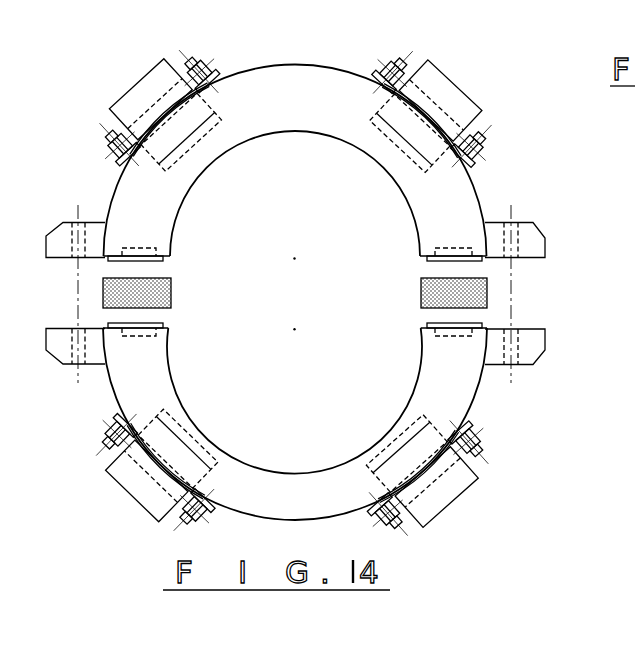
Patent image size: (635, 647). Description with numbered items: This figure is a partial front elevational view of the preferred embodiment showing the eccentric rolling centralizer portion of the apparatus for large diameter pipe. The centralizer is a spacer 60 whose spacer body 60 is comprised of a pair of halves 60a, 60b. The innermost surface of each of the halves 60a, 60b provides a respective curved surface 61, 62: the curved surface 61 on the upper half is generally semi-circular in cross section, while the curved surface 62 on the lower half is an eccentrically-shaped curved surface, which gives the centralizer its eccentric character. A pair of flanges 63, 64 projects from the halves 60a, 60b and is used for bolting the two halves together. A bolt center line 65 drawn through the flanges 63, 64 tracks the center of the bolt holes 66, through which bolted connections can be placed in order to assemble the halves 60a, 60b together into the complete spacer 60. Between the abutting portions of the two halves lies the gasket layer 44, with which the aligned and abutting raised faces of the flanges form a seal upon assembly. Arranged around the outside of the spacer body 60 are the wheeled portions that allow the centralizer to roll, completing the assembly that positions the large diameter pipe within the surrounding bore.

The spacer 60 is at (327, 281).
The spacer half 60a is at (295, 163).
The spacer half 60b is at (295, 421).
The curved surface 61 is at (322, 133).
The curved surface 62 is at (300, 473).
The flange 63 is at (543, 232).
The flange 64 is at (545, 342).
The bolt center line 65 is at (513, 316).
The bolt holes 66 is at (521, 353).
The gasket layer 44 is at (172, 291).